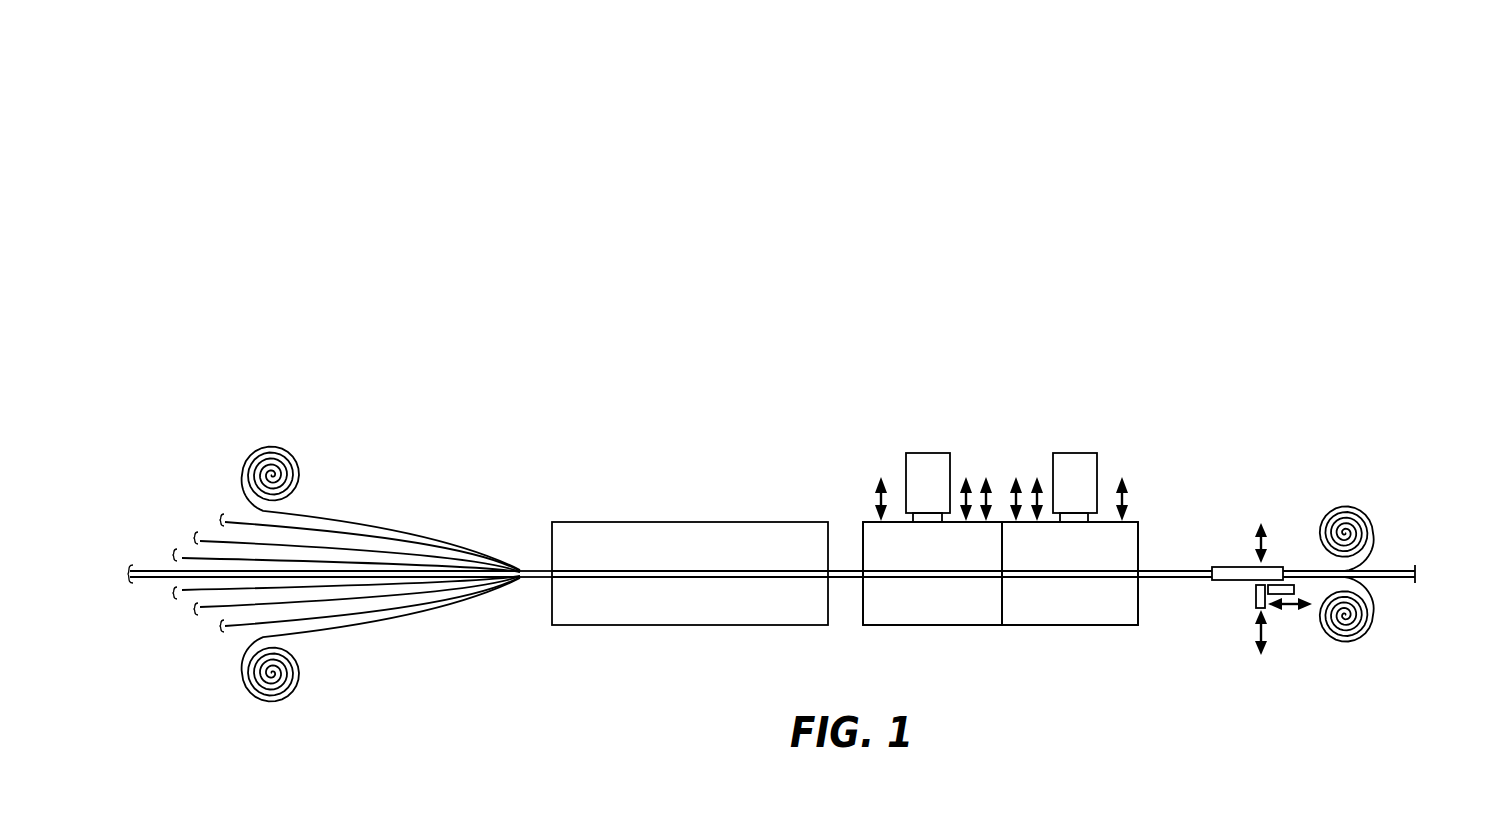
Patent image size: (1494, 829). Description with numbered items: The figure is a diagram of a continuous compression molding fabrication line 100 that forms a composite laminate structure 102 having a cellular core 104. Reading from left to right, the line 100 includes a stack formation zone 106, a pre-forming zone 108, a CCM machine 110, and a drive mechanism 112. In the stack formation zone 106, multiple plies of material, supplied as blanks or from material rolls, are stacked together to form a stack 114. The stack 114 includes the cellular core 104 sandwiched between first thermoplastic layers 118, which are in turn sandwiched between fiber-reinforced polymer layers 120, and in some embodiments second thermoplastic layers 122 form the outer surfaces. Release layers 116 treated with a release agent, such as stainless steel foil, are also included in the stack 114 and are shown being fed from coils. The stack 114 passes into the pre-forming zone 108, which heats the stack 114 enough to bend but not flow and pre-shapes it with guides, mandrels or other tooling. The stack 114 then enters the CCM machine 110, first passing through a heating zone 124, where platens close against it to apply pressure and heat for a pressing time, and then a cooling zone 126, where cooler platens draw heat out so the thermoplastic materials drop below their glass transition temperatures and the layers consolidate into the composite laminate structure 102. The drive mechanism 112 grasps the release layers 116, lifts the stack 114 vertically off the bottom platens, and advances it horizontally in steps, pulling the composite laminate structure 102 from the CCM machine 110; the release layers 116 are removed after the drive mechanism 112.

The continuous compression molding (CCM) fabrication line 100 is at (1229, 330).
The composite laminate structure 102 is at (1390, 570).
The cellular core 104 is at (153, 578).
The stack formation zone 106 is at (778, 555).
The pre-forming zone 108 is at (594, 550).
The CCM machine 110 is at (1000, 539).
The drive mechanism 112 is at (1240, 621).
The stack 114 is at (540, 570).
The release layers 116 is at (334, 523).
The first thermoplastic layers 118 is at (183, 556).
The fiber-reinforced polymer layers 120 is at (207, 539).
The second thermoplastic layers 122 is at (241, 519).
The heating zone 124 is at (947, 610).
The cooling zone 126 is at (1087, 610).